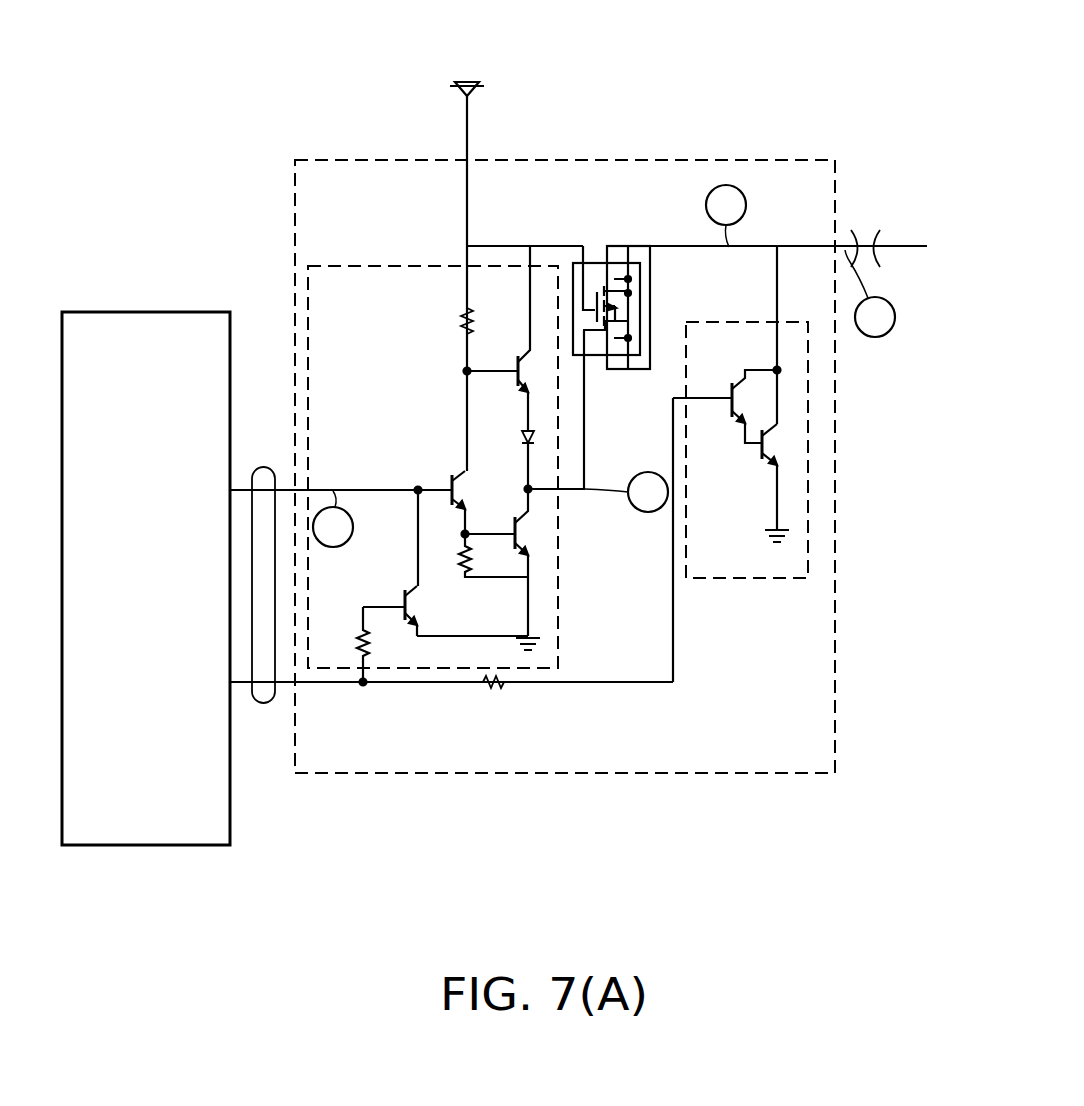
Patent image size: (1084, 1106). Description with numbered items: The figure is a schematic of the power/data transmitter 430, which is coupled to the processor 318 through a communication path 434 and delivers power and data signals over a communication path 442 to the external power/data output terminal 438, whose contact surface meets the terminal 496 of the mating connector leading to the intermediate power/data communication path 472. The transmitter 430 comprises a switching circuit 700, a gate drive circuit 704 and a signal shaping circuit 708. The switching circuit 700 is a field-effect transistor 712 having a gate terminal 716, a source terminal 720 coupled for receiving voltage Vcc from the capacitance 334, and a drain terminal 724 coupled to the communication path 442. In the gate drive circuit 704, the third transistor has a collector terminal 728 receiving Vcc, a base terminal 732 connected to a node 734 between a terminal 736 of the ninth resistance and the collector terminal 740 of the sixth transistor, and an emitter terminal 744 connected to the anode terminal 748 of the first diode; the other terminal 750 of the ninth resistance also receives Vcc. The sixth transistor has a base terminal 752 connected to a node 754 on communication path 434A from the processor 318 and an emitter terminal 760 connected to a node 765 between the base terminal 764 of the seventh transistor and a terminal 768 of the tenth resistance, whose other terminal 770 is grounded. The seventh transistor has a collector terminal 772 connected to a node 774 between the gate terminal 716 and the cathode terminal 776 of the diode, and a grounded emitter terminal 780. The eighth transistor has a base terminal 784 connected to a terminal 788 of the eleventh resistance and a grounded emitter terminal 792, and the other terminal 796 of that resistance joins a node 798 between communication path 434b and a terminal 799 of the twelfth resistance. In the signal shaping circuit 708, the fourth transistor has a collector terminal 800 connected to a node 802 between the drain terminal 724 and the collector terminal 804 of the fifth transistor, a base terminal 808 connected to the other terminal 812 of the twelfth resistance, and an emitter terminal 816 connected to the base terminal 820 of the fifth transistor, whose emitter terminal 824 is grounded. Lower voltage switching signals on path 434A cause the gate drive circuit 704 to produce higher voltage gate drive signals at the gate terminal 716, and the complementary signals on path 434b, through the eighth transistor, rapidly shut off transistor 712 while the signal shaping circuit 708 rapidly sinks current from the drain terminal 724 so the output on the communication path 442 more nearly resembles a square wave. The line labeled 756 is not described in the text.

The power/data transmitter 430 is at (312, 158).
The processor 318 is at (146, 578).
The communication path 434 is at (262, 705).
The communication path 434A is at (242, 487).
The communication path 434b is at (284, 686).
The gate drive circuit 704 is at (352, 266).
The terminal of resistance R9 750 is at (467, 283).
The capacitance 334 is at (579, 47).
The source terminal 720 is at (545, 246).
The drain terminal 724 is at (650, 246).
The collector terminal 728 is at (530, 300).
The base terminal 732 is at (508, 371).
The terminal of resistance R9 736 is at (467, 356).
The node 734 is at (467, 371).
The emitter terminal 744 is at (528, 402).
The anode terminal 748 is at (528, 420).
The collector terminal 740 is at (467, 412).
The cathode terminal 776 is at (528, 462).
The gate terminal 716 is at (585, 488).
The node 774 is at (540, 491).
The base terminal 752 is at (433, 487).
The node 754 is at (414, 488).
The Q8 collector line 756 is at (417, 543).
The emitter terminal 760 is at (458, 497).
The terminal of resistance R10 768 is at (465, 535).
The base terminal 764 is at (480, 534).
The collector terminal 772 is at (520, 528).
The node 765 is at (475, 537).
The terminal of resistance R10 770 is at (495, 580).
The emitter terminal 780 is at (528, 570).
The emitter terminal 792 is at (480, 637).
The base terminal 784 is at (405, 600).
The terminal of resistance R11 788 is at (375, 607).
The terminal of resistance R11 796 is at (363, 662).
The node 798 is at (363, 690).
The terminal of resistance R12 799 is at (445, 686).
The terminal of resistance R12 812 is at (503, 686).
The field-effect transistor 712 is at (620, 318).
The switching circuit 700 is at (602, 370).
The base terminal 808 is at (673, 437).
The emitter terminal 816 is at (738, 430).
The signal shaping circuit 708 is at (773, 579).
The collector terminal 800 is at (760, 370).
The base terminal 820 is at (745, 443).
The collector terminal 804 is at (765, 405).
The emitter terminal 824 is at (775, 498).
The node 802 is at (778, 366).
The communication path 442 is at (796, 247).
The external power/data output terminal 438 is at (844, 236).
The terminal 496 is at (880, 234).
The intermediate power/data communication path 472 is at (908, 250).